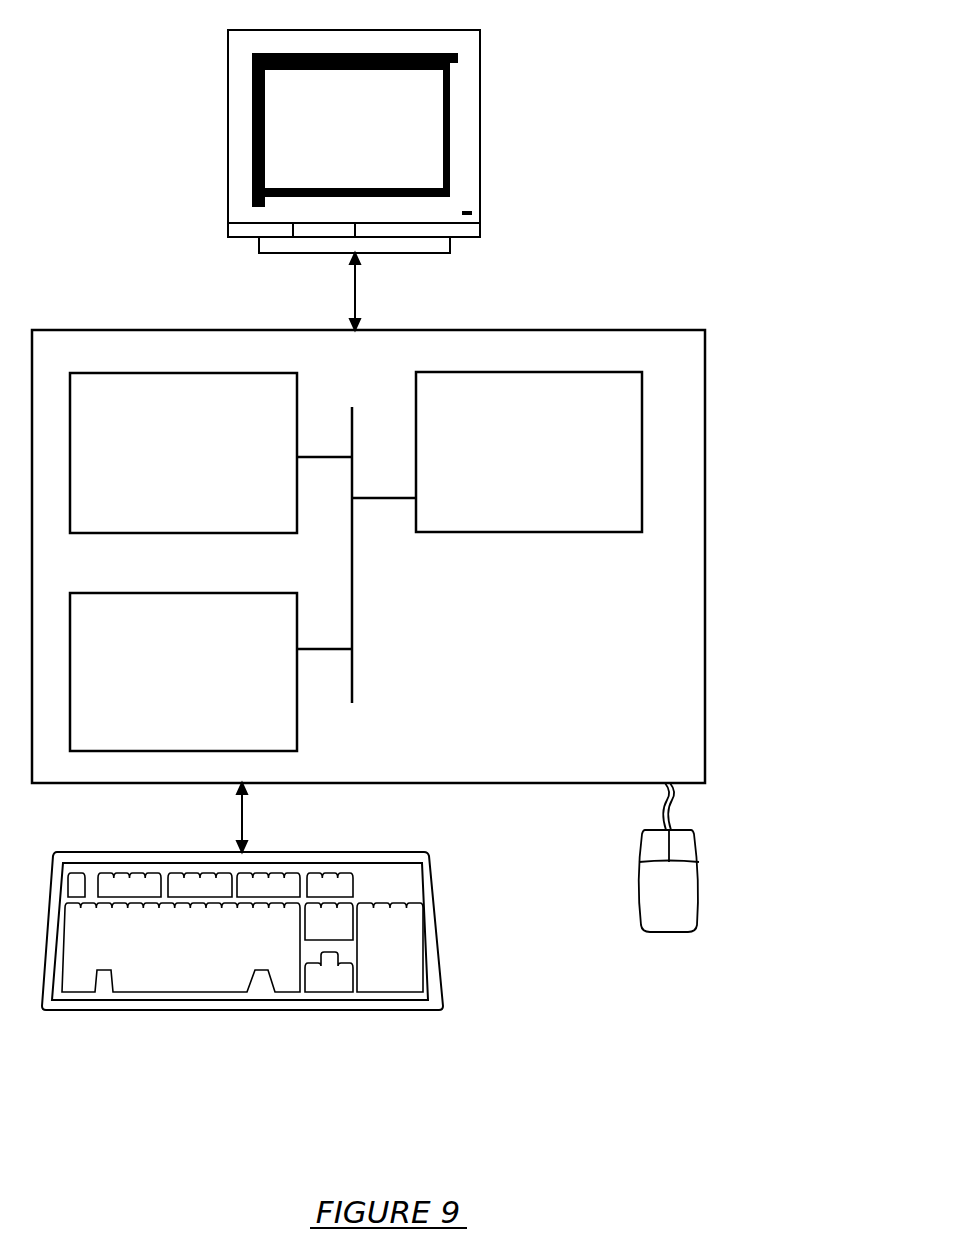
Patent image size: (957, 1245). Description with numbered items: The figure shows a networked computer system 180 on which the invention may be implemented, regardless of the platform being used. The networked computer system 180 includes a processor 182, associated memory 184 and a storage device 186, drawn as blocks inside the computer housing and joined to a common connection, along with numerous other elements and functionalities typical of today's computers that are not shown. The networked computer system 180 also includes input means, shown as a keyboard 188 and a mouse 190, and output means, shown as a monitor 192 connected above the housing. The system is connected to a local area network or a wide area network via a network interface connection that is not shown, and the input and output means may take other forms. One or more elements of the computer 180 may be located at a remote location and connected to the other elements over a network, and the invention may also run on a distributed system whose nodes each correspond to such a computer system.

The networked computer system 180 is at (724, 186).
The processor 182 is at (524, 464).
The memory 184 is at (162, 462).
The storage device 186 is at (158, 686).
The keyboard 188 is at (152, 971).
The mouse 190 is at (648, 902).
The monitor 192 is at (334, 144).